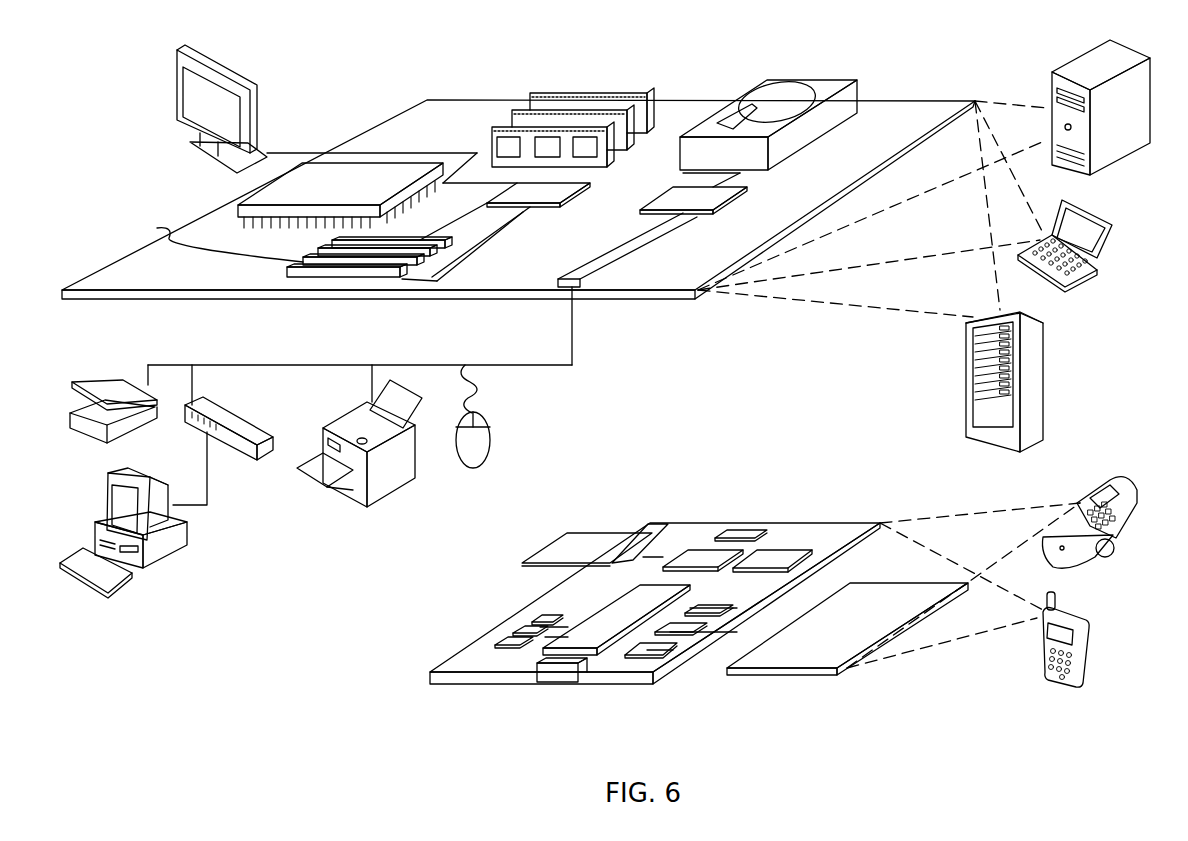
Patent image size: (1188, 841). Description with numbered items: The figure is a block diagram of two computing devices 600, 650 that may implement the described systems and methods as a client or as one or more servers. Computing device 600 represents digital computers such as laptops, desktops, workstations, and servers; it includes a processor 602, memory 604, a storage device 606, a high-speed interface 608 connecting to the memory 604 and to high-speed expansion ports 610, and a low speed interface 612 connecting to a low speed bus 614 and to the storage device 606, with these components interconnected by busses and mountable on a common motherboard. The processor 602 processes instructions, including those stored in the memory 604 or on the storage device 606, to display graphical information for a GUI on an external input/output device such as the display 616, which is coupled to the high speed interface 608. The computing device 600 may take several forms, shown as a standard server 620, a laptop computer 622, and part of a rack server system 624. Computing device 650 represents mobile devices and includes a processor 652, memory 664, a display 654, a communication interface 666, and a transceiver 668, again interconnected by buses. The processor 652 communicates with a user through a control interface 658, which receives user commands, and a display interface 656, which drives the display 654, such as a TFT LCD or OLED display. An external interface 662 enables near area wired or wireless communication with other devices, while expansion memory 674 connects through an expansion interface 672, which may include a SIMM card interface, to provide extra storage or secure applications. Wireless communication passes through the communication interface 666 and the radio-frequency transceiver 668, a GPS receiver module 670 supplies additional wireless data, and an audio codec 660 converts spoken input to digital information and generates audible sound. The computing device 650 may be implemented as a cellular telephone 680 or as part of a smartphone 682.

The computing device 600 is at (355, 78).
The processor 602 is at (237, 207).
The memory 604 is at (540, 94).
The storage device 606 is at (767, 80).
The high-speed interface 608 is at (515, 195).
The high-speed expansion ports 610 is at (285, 248).
The low speed interface 612 is at (677, 195).
The low speed bus 614 is at (582, 292).
The display 616 is at (180, 52).
The standard server 620 is at (1052, 86).
The laptop computer 622 is at (1106, 226).
The rack server system 624 is at (964, 402).
The computing device 650 is at (406, 683).
The processor 652 is at (592, 640).
The display 654 is at (810, 657).
The display interface 656 is at (655, 647).
The control interface 658 is at (685, 623).
The audio codec 660 is at (710, 605).
The external interface 662 is at (558, 672).
The memory 664 is at (512, 635).
The communication interface 666 is at (702, 555).
The transceiver 668 is at (777, 552).
The GPS receiver module 670 is at (748, 523).
The expansion interface 672 is at (633, 533).
The expansion memory 674 is at (570, 534).
The cellular telephone 680 is at (1092, 455).
The smartphone 682 is at (1040, 648).